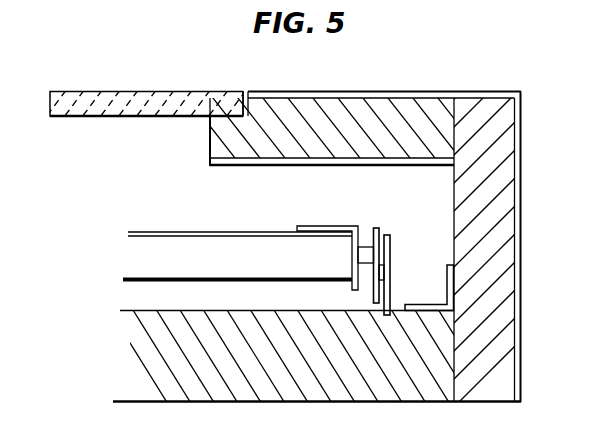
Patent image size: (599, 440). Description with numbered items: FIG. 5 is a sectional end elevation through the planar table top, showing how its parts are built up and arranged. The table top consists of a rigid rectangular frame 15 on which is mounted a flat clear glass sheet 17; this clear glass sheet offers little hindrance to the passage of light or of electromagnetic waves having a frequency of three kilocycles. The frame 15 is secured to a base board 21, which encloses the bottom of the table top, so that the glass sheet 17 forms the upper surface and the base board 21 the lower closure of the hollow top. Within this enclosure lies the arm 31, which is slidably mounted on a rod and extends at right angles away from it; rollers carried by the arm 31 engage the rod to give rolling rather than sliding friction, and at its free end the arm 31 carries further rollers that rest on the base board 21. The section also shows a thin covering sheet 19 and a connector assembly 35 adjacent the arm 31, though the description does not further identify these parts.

The rigid rectangular frame 15 is at (498, 188).
The flat clear glass sheet 17 is at (370, 107).
The outer cover plate 19 is at (285, 89).
The base board 21 is at (348, 403).
The arm 31 is at (231, 267).
The connector assembly 35 is at (391, 267).